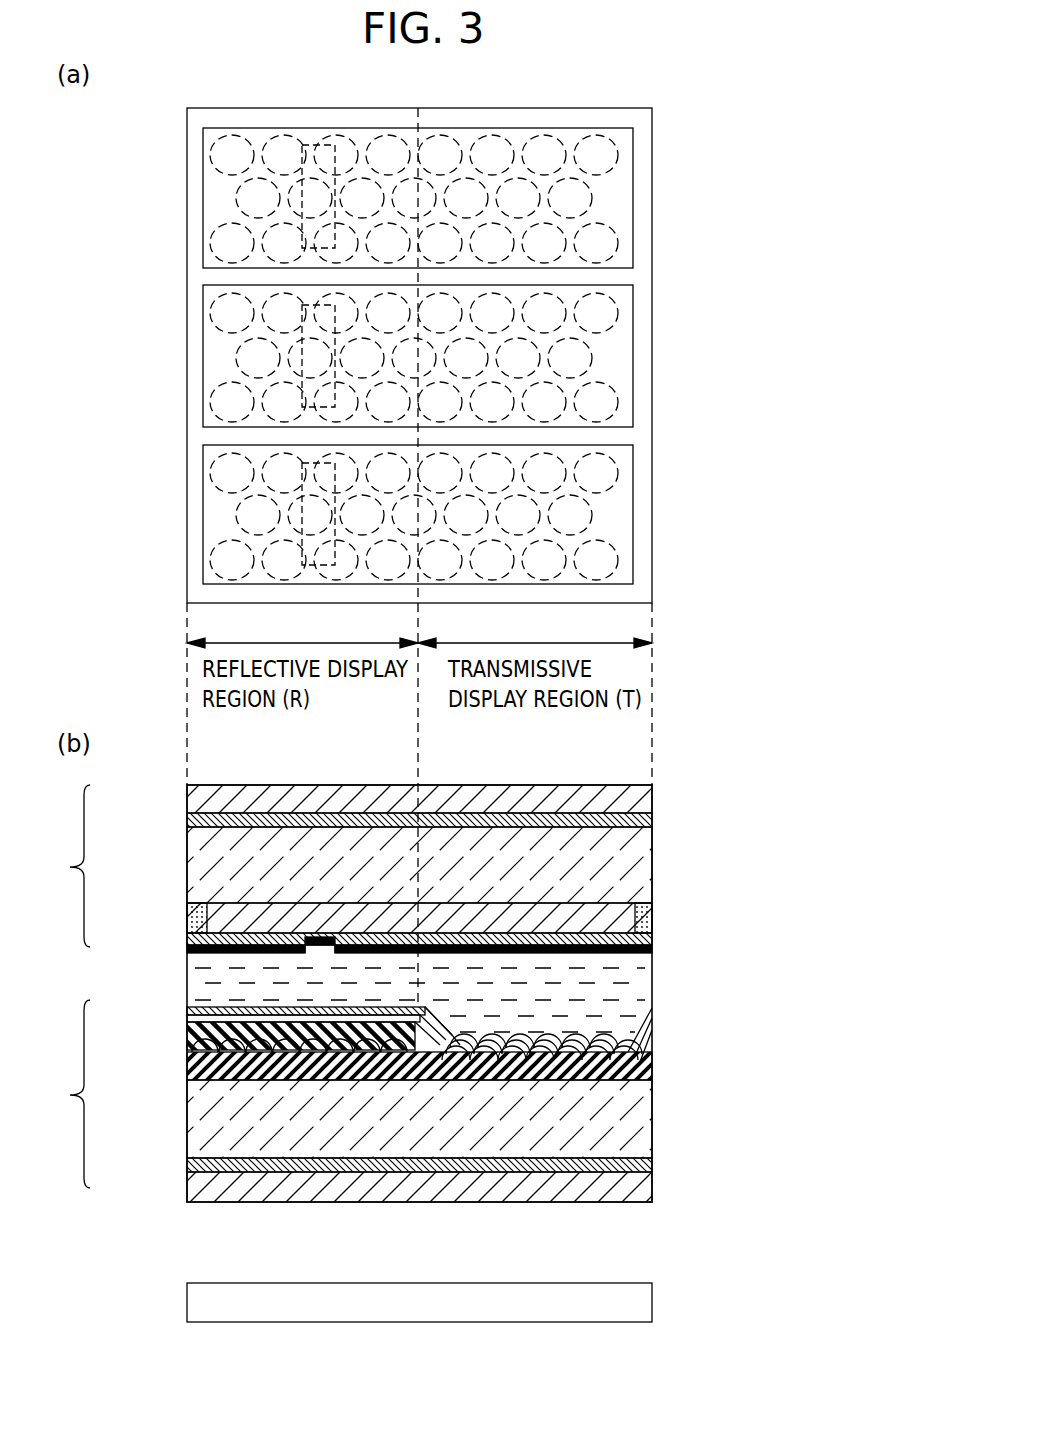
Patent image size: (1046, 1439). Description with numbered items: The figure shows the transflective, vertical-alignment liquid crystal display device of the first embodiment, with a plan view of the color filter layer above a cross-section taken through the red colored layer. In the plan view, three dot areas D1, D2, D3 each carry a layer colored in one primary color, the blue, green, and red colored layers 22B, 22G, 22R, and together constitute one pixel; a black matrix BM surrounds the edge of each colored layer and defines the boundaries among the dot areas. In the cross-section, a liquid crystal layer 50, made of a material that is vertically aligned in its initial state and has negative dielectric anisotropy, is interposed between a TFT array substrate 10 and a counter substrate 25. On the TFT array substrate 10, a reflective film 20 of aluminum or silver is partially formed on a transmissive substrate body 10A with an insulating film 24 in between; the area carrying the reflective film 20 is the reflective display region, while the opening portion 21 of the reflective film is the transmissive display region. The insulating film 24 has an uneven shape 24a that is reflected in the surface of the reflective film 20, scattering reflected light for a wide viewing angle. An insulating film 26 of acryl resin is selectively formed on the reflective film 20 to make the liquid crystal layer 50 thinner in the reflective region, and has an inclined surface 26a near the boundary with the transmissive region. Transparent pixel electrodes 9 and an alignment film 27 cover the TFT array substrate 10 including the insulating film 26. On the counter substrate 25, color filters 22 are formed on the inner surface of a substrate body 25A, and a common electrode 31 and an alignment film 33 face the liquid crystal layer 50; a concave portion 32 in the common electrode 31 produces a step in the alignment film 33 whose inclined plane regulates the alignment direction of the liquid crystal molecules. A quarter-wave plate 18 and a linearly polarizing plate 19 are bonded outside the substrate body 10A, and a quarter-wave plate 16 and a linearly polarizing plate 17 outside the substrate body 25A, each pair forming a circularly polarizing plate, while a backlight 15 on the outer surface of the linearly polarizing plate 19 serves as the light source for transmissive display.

The color filter 22 is at (654, 112).
The blue colored layer 22B is at (612, 236).
The green colored layer 22G is at (612, 396).
The red colored layer 22R is at (612, 551).
The dot area D1 is at (212, 180).
The dot area D2 is at (212, 342).
The dot area D3 is at (212, 497).
The concave portion 32 is at (212, 203).
The black matrix BM is at (193, 437).
The uneven shape of the insulating film 24a is at (215, 566).
The linearly polarizing plate 17 is at (640, 801).
The quarter-wave plate 16 is at (640, 818).
The substrate body 25A is at (640, 855).
The counter substrate 25 is at (58, 866).
The common electrode 31 is at (655, 940).
The alignment film 33 is at (655, 947).
The liquid crystal layer 50 is at (655, 980).
The alignment film 27 is at (187, 1007).
The insulating film 26 is at (187, 1024).
The inclined surface 26a is at (655, 1030).
The reflective film 20 is at (187, 1040).
The pixel electrode 9 is at (655, 1015).
The opening portion 21 is at (432, 1055).
The insulating film 24 is at (370, 1062).
The substrate body 10A is at (655, 1125).
The TFT array substrate 10 is at (58, 1094).
The quarter-wave plate 18 is at (655, 1165).
The linearly polarizing plate 19 is at (655, 1190).
The backlight 15 is at (655, 1300).